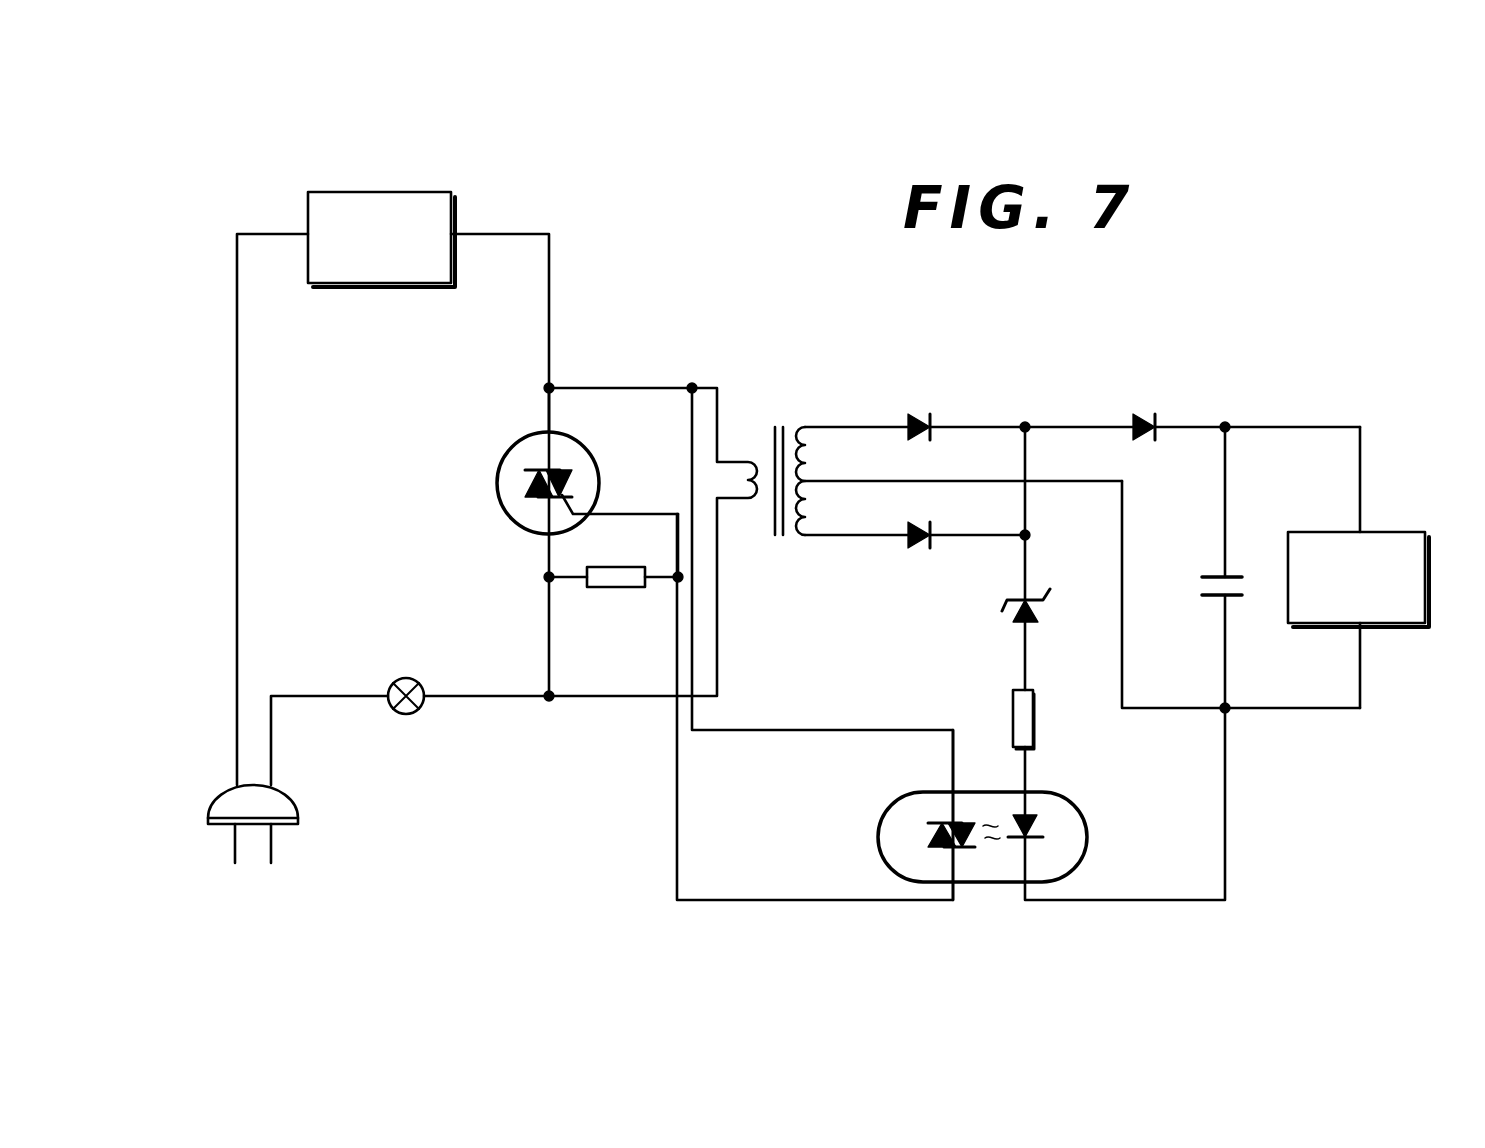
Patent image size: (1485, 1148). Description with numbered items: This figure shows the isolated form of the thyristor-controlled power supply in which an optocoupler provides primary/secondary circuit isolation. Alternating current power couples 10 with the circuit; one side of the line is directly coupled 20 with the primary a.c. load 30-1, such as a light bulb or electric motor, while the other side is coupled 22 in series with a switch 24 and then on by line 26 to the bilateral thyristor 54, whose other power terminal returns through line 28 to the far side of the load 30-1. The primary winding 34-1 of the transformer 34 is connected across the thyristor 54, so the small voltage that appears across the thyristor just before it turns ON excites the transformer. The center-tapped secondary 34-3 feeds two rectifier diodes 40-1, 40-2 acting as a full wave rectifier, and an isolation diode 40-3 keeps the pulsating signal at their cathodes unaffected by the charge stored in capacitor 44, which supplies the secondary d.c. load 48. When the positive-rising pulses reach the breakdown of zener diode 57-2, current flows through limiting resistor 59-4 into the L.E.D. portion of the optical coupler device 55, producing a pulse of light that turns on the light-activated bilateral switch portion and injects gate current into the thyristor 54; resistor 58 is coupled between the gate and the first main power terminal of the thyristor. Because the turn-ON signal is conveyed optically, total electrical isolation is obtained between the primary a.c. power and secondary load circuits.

The alternating current electric power coupling 10 is at (303, 811).
The direct coupling line 20 is at (240, 440).
The series coupling line 22 is at (325, 692).
The switch 24 is at (411, 677).
The conductor to triac 26 is at (503, 692).
The line 28 is at (556, 305).
The primary a.c. load 30-1 is at (455, 213).
The transformer 34 is at (784, 420).
The primary winding 34-1 is at (746, 452).
The center-tapped transformer secondary 34-3 is at (823, 498).
The rectifier diode 40-1 is at (940, 418).
The rectifier diode 40-2 is at (924, 552).
The isolation diode 40-3 is at (1172, 418).
The capacitor 44 is at (1190, 576).
The secondary d.c. load 48 is at (1417, 528).
The bilateral thyristor 54 is at (494, 488).
The optical coupler device 55 is at (1083, 806).
The zener diode 57-2 is at (1059, 592).
The resistor 58 is at (607, 590).
The resistor 59-4 is at (1040, 720).